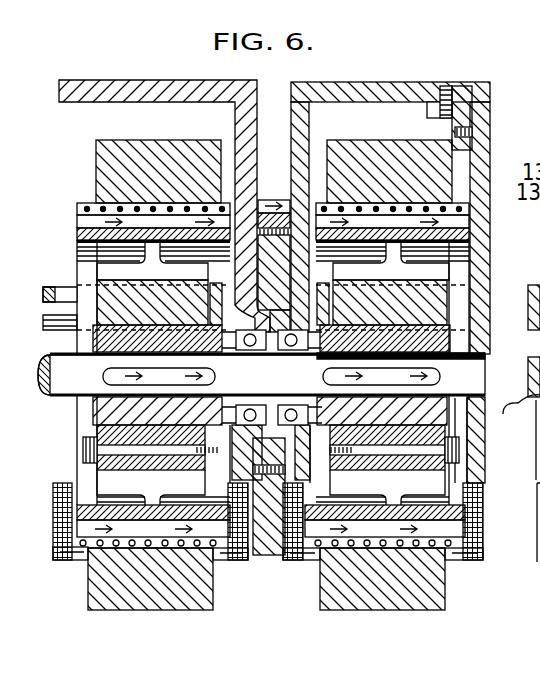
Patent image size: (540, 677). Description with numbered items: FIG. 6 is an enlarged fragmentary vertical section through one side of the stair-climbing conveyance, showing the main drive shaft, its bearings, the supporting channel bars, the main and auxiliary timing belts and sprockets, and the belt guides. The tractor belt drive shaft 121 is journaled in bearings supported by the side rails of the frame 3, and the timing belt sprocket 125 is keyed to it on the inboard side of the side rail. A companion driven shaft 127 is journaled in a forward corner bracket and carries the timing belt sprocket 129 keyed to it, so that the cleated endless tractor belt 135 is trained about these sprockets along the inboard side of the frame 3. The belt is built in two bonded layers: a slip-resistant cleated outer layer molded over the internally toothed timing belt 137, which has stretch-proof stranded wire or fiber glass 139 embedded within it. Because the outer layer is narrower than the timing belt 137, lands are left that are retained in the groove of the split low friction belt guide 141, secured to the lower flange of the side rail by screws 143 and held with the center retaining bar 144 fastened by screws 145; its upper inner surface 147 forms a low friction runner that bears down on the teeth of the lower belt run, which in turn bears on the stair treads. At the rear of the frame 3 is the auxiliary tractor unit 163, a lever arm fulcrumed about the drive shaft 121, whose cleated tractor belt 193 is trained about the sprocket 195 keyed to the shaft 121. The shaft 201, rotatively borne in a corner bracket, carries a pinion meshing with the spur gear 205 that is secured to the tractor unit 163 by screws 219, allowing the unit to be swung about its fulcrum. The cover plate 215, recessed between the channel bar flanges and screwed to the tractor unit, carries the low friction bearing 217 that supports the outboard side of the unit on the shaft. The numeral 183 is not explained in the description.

The frame 3 is at (70, 83).
The tractor unit 163 is at (398, 72).
The cover plate 215 is at (472, 112).
The cleated endless tractor belt 135 is at (96, 171).
The stretch-proof strand 139 is at (174, 610).
The cleated endless tractor belt 193 is at (452, 162).
The timing belt 137 is at (84, 205).
The timing belt sprocket 125 is at (80, 240).
The sprocket 195 is at (470, 238).
The shaft 201 is at (66, 287).
The tractor belt drive shaft 121 is at (64, 396).
The low friction bearing 217 is at (476, 351).
The screw 143 is at (62, 561).
The split low friction belt guide 141 is at (82, 562).
The screw 219 is at (300, 198).
The spur gear 205 is at (262, 558).
The driven shaft 127 is at (521, 360).
The screw 145 is at (522, 431).
The center retaining bar 144 is at (522, 461).
The upper inner surface 147 is at (539, 486).
The timing belt sprocket 129 is at (527, 220).
The plate 183 is at (525, 267).